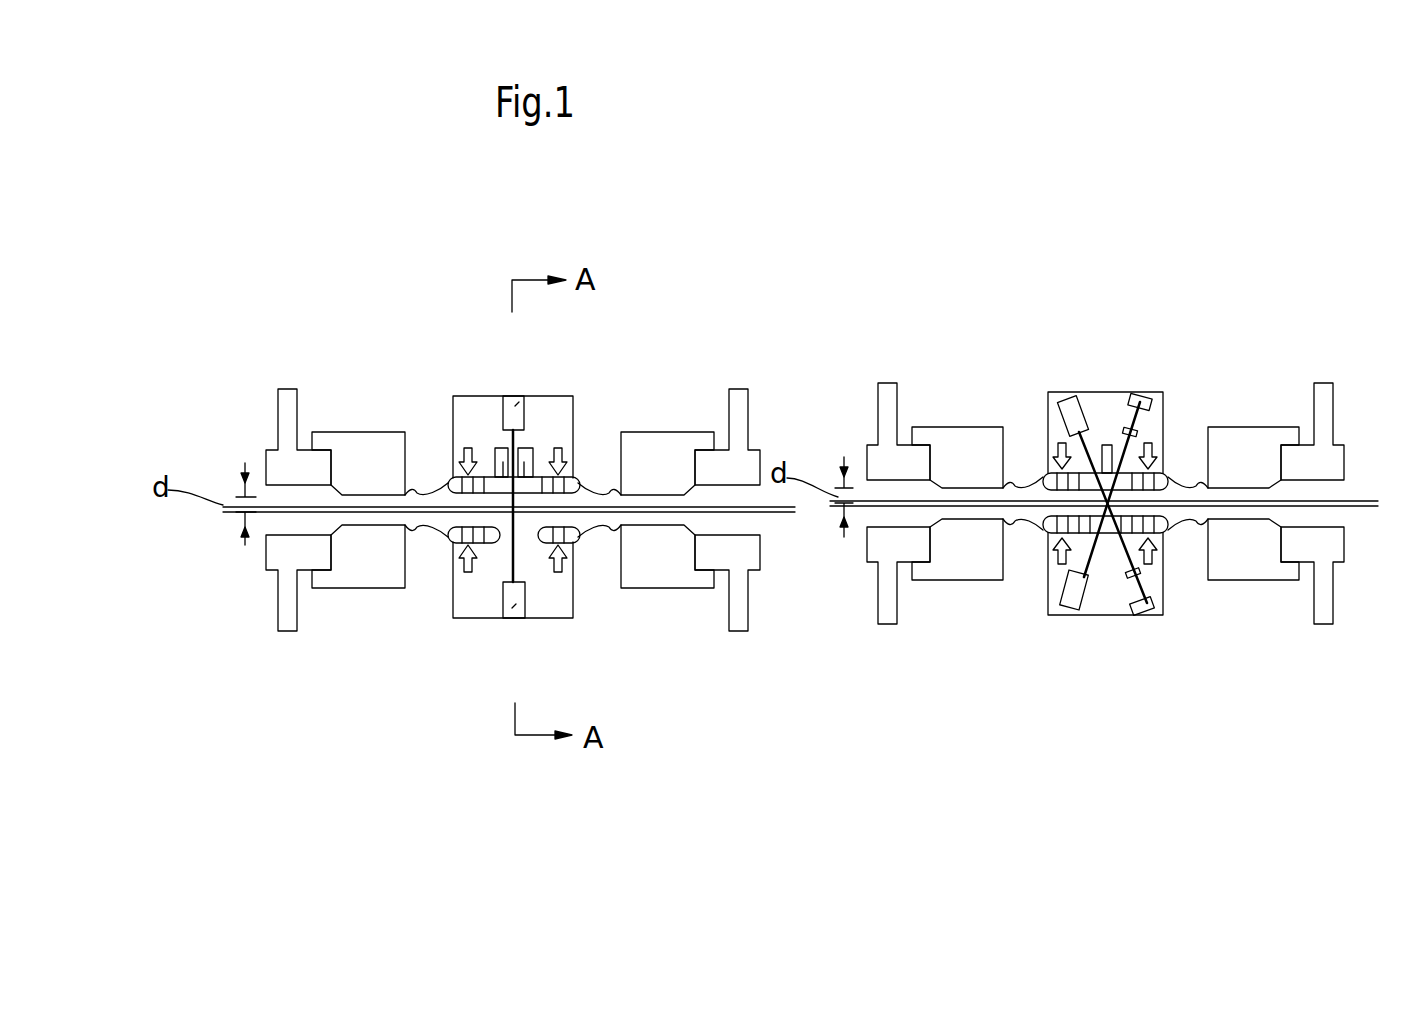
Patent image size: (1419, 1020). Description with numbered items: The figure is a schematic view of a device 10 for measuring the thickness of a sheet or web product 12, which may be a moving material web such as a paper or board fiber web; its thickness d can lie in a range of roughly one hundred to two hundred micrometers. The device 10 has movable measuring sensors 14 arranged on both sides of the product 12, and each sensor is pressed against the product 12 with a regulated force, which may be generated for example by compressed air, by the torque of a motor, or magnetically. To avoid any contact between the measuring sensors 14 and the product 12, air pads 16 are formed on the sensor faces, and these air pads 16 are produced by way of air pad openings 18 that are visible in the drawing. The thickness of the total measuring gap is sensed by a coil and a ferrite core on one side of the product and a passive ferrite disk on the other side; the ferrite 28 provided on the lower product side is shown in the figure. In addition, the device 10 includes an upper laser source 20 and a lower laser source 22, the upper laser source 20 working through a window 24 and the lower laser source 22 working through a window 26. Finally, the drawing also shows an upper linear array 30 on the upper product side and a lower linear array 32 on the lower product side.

The device 10 is at (878, 325).
The sheet or web product 12 is at (263, 514).
The measuring sensors 14 is at (279, 360).
The air pads 16 is at (582, 478).
The air pad openings 18 is at (453, 476).
The upper laser source 20 is at (517, 407).
The lower laser source 22 is at (535, 620).
The window for the upper laser source 24 is at (490, 476).
The window for the lower laser source 26 is at (500, 534).
The ferrite 28 is at (587, 538).
The upper linear array 30 is at (1140, 396).
The lower linear array 32 is at (1142, 612).